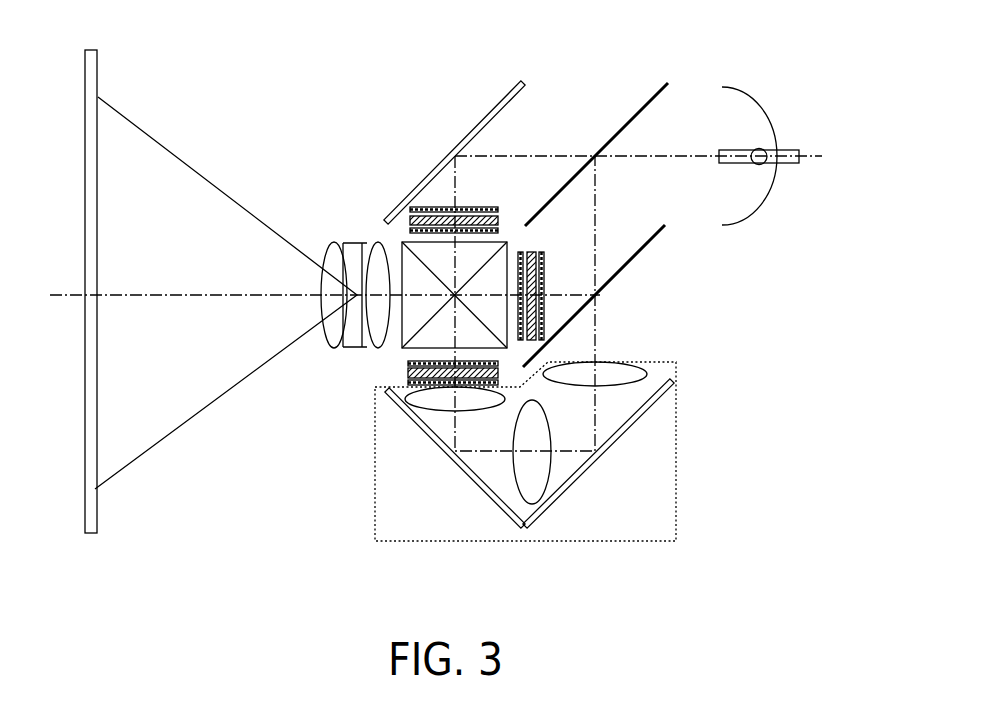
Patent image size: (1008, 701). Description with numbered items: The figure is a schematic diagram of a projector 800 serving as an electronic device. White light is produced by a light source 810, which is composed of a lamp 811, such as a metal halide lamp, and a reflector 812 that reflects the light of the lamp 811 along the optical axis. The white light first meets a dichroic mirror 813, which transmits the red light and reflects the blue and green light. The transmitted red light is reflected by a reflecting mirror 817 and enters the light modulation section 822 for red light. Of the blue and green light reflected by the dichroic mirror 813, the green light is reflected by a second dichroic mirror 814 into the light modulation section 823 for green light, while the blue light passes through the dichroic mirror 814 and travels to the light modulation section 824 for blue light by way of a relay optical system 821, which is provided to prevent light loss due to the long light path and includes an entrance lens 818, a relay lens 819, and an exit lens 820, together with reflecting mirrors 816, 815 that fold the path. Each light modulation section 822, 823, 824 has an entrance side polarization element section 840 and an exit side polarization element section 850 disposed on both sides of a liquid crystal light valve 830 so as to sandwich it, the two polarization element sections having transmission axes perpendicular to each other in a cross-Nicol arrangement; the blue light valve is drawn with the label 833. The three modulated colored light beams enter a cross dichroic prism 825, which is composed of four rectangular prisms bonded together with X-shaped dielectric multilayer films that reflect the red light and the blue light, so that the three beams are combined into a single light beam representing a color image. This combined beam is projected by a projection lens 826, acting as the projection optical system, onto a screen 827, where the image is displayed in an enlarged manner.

The projector 800 is at (148, 84).
The light source 810 is at (781, 133).
The lamp 811 is at (763, 149).
The reflector 812 is at (763, 201).
The dichroic mirror 813 is at (642, 108).
The dichroic mirror 814 is at (665, 228).
The reflecting mirror 815 is at (645, 410).
The reflecting mirror 816 is at (462, 474).
The reflecting mirror 817 is at (484, 116).
The entrance lens 818 is at (614, 367).
The relay lens 819 is at (541, 467).
The exit lens 820 is at (430, 402).
The relay optical system 821 is at (564, 425).
The light modulation section 822 is at (396, 177).
The light modulation section 823 is at (552, 268).
The light modulation section 824 is at (454, 391).
The cross dichroic prism 825 is at (501, 247).
The projection lens 826 is at (390, 354).
The screen 827 is at (92, 534).
The liquid crystal light valve 830 is at (410, 221).
The liquid crystal light valve (blue) 833 is at (499, 376).
The entrance side polarization element section 840 is at (428, 208).
The exit side polarization element section 850 is at (425, 156).